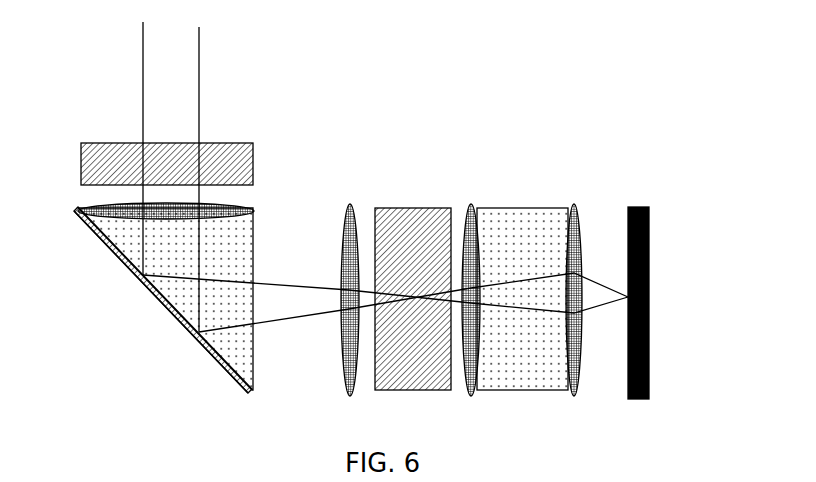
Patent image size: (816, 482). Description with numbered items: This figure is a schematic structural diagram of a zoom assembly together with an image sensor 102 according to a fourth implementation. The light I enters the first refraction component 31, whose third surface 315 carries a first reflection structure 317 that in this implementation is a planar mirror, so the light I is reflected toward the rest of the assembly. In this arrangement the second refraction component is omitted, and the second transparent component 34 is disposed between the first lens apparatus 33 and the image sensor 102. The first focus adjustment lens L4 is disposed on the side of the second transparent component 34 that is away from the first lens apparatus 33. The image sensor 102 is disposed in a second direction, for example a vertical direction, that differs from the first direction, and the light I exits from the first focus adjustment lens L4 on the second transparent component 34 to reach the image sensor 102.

The light I is at (199, 81).
The first refraction component 31 is at (127, 235).
The third surface 315 is at (184, 322).
The first reflection structure 317 is at (214, 366).
The first lens apparatus 33 is at (400, 227).
The second transparent component 34 is at (540, 218).
The first focus adjustment lens L4 is at (567, 208).
The image sensor 102 is at (650, 232).